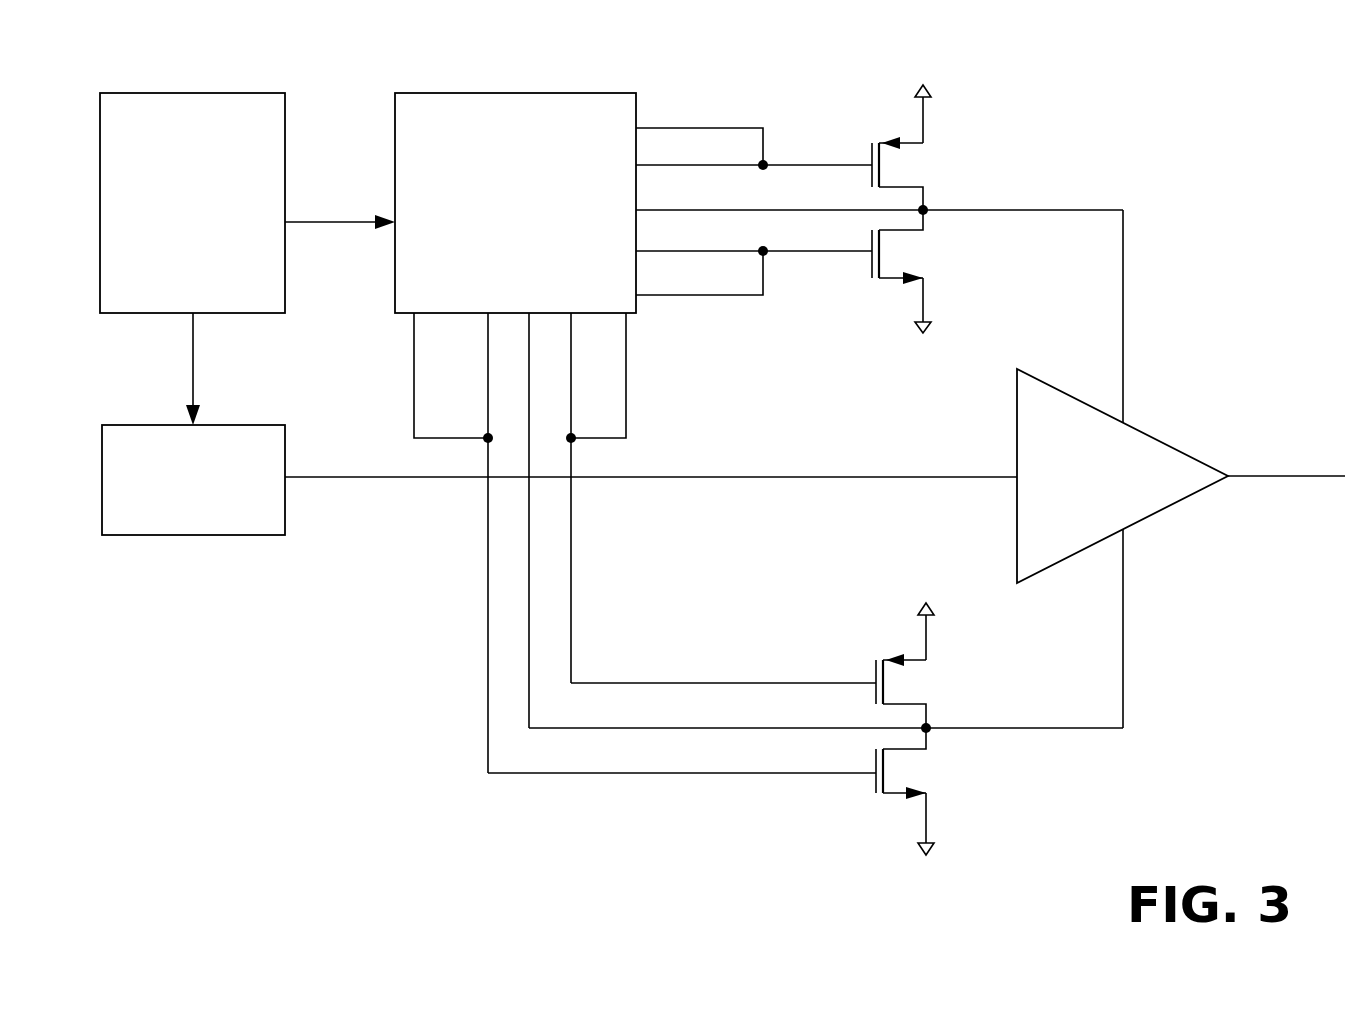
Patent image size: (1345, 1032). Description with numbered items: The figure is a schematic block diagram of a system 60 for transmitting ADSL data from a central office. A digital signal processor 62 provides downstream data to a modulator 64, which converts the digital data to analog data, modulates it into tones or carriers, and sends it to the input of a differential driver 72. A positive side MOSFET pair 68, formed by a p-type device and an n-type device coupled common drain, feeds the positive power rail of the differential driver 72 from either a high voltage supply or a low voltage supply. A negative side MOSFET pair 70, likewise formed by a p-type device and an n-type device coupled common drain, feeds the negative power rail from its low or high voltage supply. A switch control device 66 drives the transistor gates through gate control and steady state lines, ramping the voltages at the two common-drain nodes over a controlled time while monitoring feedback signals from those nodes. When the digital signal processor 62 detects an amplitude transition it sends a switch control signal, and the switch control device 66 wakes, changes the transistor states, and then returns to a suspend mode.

The system 60 is at (1183, 48).
The digital signal processor 62 is at (202, 93).
The modulator 64 is at (250, 425).
The switch control device 66 is at (542, 93).
The positive side MOSFET pair 68 is at (850, 94).
The negative side MOSFET pair 70 is at (851, 630).
The differential driver 72 is at (1052, 383).